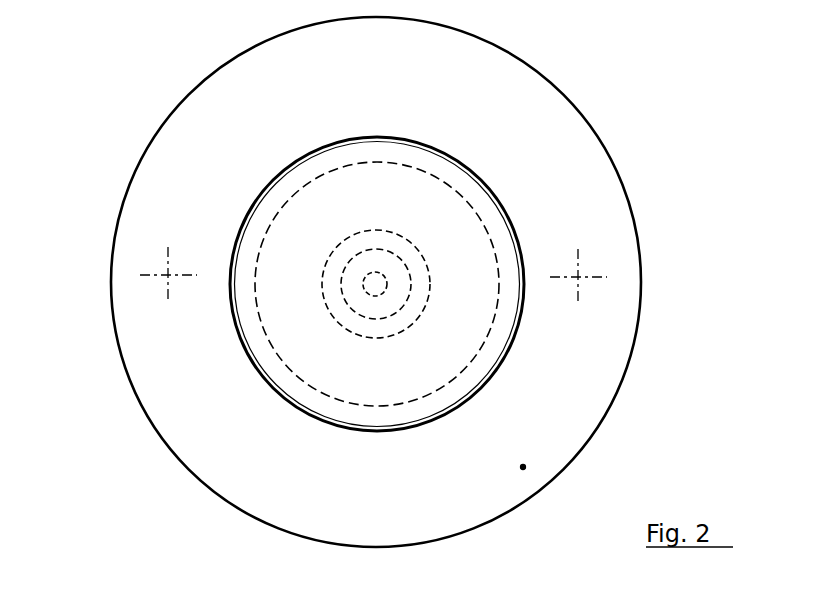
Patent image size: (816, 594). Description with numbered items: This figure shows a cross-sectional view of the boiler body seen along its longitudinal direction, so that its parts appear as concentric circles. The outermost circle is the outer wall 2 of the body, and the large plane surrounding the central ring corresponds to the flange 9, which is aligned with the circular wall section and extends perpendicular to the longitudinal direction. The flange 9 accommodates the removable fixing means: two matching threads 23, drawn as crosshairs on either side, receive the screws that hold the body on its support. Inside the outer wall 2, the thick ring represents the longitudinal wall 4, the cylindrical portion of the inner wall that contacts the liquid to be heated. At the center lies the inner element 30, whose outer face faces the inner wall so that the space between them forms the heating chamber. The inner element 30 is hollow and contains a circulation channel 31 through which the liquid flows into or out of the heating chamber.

The outer wall 2 is at (450, 165).
The longitudinal wall 4 is at (283, 207).
The inner element 30 is at (420, 262).
The circulation channel 31 is at (375, 284).
The matching threads 23 is at (142, 275).
The flange 9 is at (523, 467).